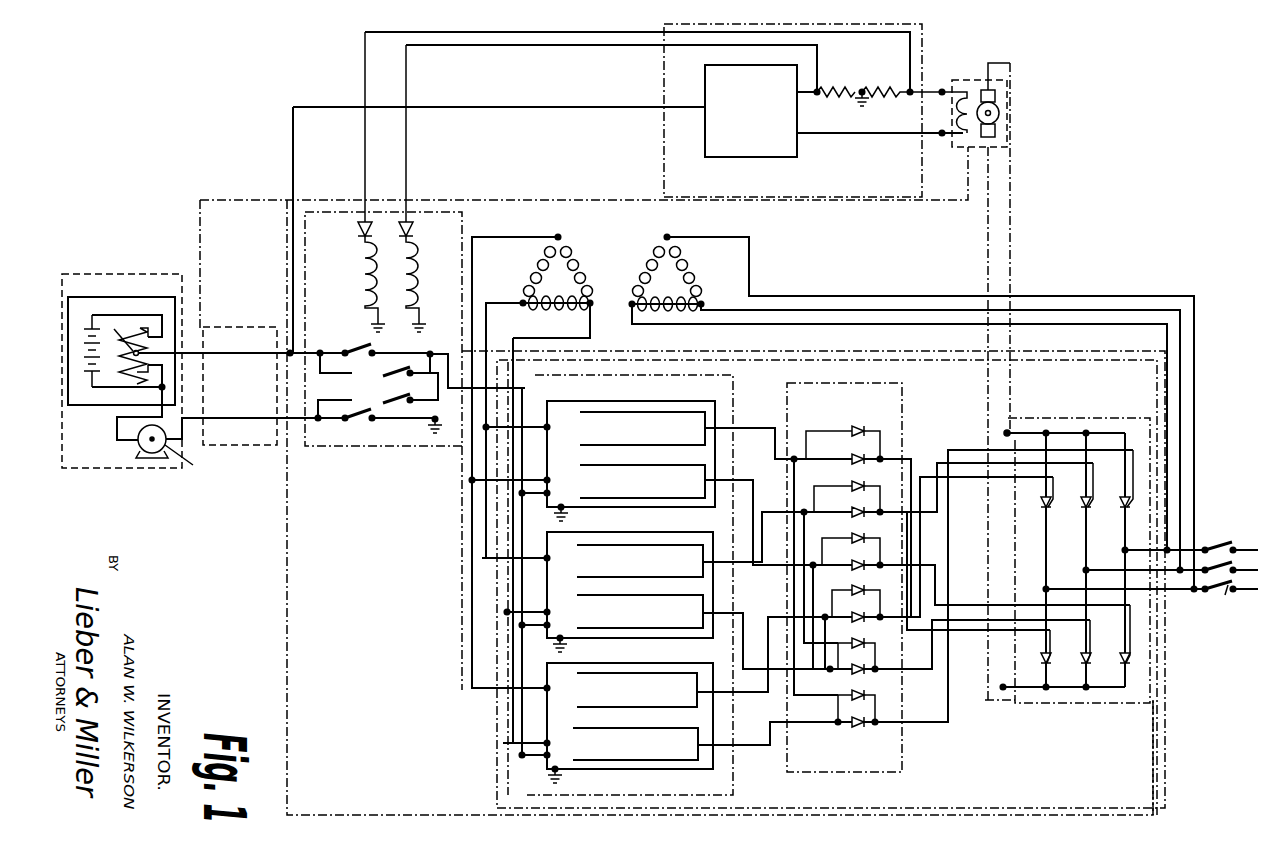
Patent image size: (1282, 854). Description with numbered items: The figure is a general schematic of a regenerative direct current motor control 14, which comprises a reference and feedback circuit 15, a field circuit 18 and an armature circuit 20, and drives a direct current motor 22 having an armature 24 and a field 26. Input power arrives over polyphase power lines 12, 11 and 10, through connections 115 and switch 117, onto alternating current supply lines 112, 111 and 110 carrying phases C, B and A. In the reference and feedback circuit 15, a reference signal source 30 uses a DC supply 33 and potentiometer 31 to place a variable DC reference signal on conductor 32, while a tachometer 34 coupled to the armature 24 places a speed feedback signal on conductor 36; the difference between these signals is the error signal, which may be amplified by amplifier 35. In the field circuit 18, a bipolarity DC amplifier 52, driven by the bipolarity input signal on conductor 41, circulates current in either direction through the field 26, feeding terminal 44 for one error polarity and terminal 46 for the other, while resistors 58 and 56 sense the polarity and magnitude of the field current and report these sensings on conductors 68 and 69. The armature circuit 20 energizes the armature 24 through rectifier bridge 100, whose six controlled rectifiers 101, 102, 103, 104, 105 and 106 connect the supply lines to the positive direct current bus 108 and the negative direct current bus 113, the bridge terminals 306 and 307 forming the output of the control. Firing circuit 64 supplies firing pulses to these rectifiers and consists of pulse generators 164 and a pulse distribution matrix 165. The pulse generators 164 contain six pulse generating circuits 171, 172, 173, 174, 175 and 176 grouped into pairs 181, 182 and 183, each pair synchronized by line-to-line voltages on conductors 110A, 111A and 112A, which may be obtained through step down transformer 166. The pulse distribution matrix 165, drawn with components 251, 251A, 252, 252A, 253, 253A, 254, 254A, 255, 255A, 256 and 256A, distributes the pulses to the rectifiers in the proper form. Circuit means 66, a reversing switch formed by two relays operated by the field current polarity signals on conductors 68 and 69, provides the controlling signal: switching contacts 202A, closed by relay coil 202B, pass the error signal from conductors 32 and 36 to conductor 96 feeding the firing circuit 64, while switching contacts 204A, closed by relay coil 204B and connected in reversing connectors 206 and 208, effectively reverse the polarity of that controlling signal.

The polyphase power line 10 is at (1240, 548).
The polyphase power line 11 is at (1240, 572).
The polyphase power line 12 is at (1238, 592).
The control 14 is at (413, 543).
The reference and feedback circuit 15 is at (120, 274).
The field circuit 18 is at (925, 30).
The armature circuit 20 is at (1156, 723).
The direct current motor 22 is at (990, 78).
The armature 24 is at (1000, 108).
The field 26 is at (978, 142).
The reference signal source 30 is at (126, 298).
The potentiometer 31 is at (119, 334).
The conductor 32 is at (233, 344).
The DC supply 33 is at (92, 322).
The tachometer 34 is at (141, 450).
The amplifier 35 is at (232, 327).
The conductor 36 is at (228, 420).
The conductor 41 is at (291, 148).
The terminal 44 is at (942, 88).
The terminal 46 is at (942, 137).
The bipolarity DC amplifier 52 is at (798, 150).
The resistor 56 is at (880, 86).
The resistor 58 is at (830, 86).
The firing circuit 64 is at (792, 354).
The circuit means 66 is at (346, 448).
The conductor 68 is at (527, 33).
The conductor 69 is at (543, 46).
The reference signal line 96 is at (546, 385).
The rectifier bridge 100 is at (1078, 418).
The controlled rectifier 101 is at (1033, 656).
The controlled rectifier 102 is at (1081, 508).
The controlled rectifier 103 is at (1113, 644).
The controlled rectifier 104 is at (1041, 508).
The controlled rectifier 105 is at (1073, 651).
The controlled rectifier 106 is at (1120, 508).
The positive direct current bus 108 is at (1012, 258).
The alternating current supply line 110 is at (868, 296).
The conductor 110A is at (468, 600).
The alternating current supply line 111 is at (962, 432).
The conductor 111A is at (570, 342).
The alternating current supply line 112 is at (1190, 608).
The conductor 112A is at (523, 299).
The negative direct current bus 113 is at (986, 238).
The connections 115 is at (1225, 598).
The switch 117 is at (1226, 540).
The pulse generators 164 is at (736, 378).
The pulse distribution matrix 165 is at (904, 396).
The step down transformer 166 is at (626, 260).
The pulse generating circuit 171 is at (648, 410).
The pulse generating circuit 172 is at (650, 472).
The pulse generating circuit 173 is at (648, 543).
The pulse generating circuit 174 is at (655, 602).
The pulse generating circuit 175 is at (662, 674).
The pulse generating circuit 176 is at (655, 734).
The pulse generating circuit pair 181 is at (620, 404).
The pulse generating circuit pair 182 is at (616, 538).
The pulse generating circuit pair 183 is at (626, 671).
The switching contacts 202A is at (346, 350).
The relay coil 202B is at (356, 264).
The switching contacts 204A is at (392, 391).
The relay coil 204B is at (414, 266).
The reversing connector 206 is at (336, 363).
The reversing connector 208 is at (335, 403).
The diode 251 is at (856, 454).
The diode 251A is at (862, 419).
The diode 252 is at (855, 506).
The diode 252A is at (858, 482).
The diode 253 is at (855, 560).
The diode 253A is at (858, 534).
The diode 254 is at (856, 612).
The diode 254A is at (858, 586).
The diode 255 is at (958, 647).
The diode 255A is at (856, 640).
The diode 256 is at (984, 588).
The diode 256A is at (856, 692).
The bridge terminal 306 is at (1010, 430).
The bridge terminal 307 is at (995, 713).